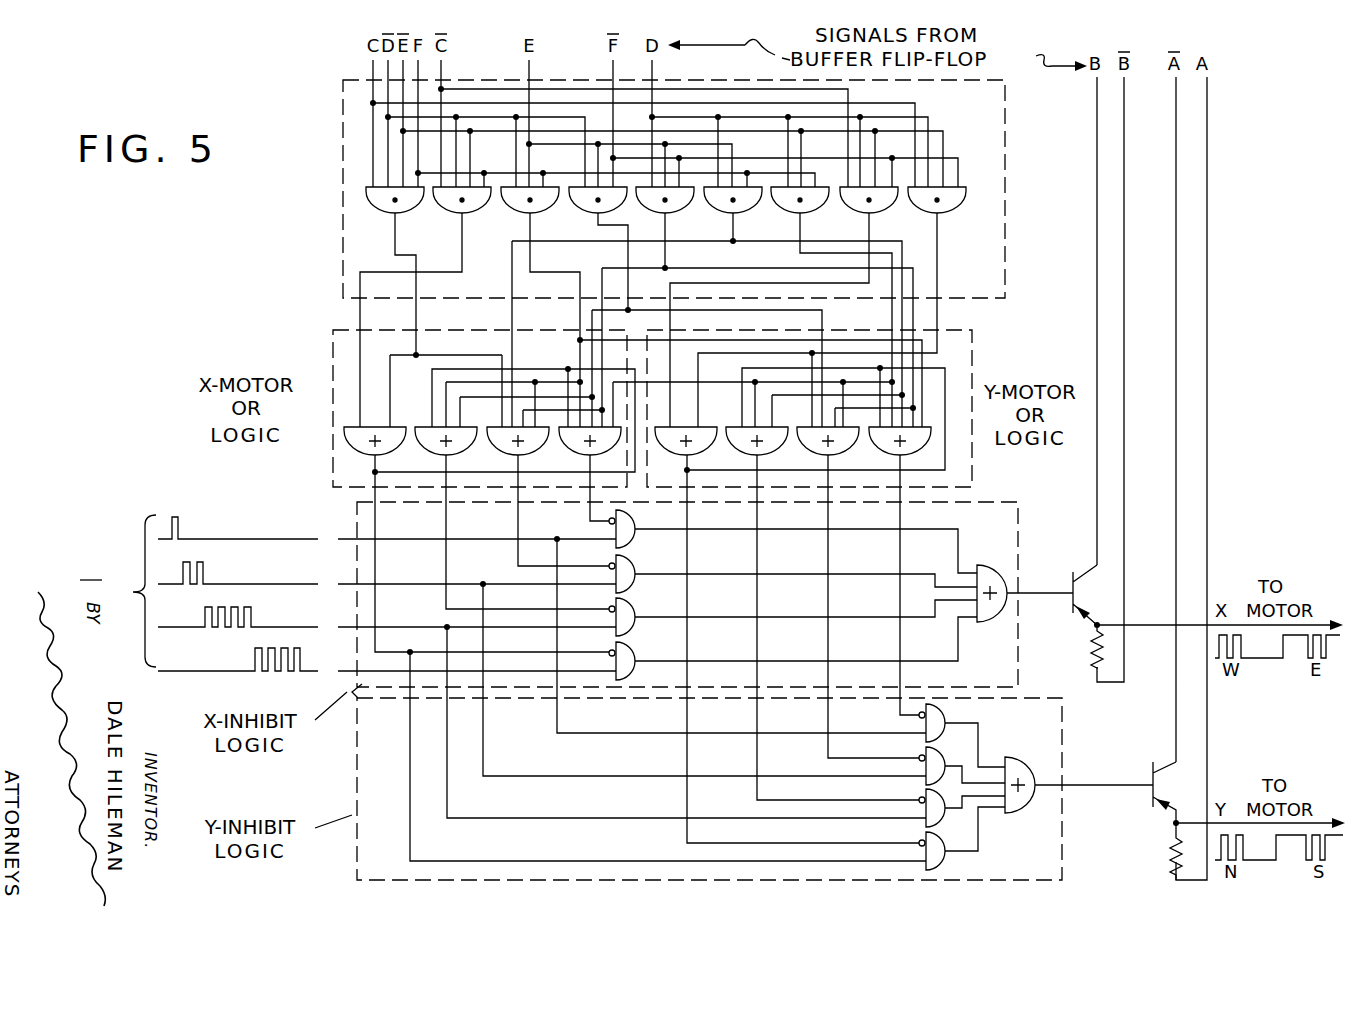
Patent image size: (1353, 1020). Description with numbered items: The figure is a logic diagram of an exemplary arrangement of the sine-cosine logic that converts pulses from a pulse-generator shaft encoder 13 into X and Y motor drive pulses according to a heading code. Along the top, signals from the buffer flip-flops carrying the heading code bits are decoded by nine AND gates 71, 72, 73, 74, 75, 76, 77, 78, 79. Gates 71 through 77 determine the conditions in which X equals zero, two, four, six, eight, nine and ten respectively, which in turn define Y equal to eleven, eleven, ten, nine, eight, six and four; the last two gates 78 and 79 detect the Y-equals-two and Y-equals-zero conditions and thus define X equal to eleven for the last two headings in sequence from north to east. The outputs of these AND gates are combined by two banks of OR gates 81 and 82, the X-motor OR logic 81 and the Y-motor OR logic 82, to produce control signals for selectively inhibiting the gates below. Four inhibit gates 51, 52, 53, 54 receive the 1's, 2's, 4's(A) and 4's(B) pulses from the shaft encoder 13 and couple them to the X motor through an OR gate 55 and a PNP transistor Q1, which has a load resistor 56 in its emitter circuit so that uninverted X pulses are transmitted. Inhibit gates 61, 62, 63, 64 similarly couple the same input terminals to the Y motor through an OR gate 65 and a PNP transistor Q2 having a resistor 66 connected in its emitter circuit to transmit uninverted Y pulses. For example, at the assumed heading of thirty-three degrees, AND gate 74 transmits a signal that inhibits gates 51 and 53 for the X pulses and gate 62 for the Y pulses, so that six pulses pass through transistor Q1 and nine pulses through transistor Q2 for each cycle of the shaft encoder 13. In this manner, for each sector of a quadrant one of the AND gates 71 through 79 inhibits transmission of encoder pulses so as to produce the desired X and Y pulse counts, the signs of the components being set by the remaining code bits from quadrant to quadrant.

The pulse-generator shaft encoder 13 is at (128, 584).
The inhibit gate 51 is at (630, 541).
The inhibit gate 52 is at (630, 586).
The inhibit gate 53 is at (630, 629).
The inhibit gate 54 is at (630, 673).
The OR gate 55 is at (994, 565).
The load resistor 56 is at (1094, 654).
The inhibit gate 61 is at (946, 712).
The inhibit gate 62 is at (940, 751).
The inhibit gate 63 is at (940, 823).
The inhibit gate 64 is at (946, 862).
The OR gate 65 is at (1028, 806).
The resistor 66 is at (1174, 866).
The AND gate 71 is at (381, 214).
The AND gate 72 is at (448, 214).
The AND gate 73 is at (516, 214).
The AND gate 74 is at (584, 214).
The AND gate 75 is at (680, 214).
The AND gate 76 is at (748, 214).
The AND gate 77 is at (815, 214).
The AND gate 78 is at (884, 214).
The AND gate 79 is at (952, 214).
The bank of OR gates 81 is at (333, 332).
The bank of OR gates 82 is at (962, 348).
The PNP transistor Q1 is at (1089, 595).
The PNP transistor Q2 is at (1168, 792).